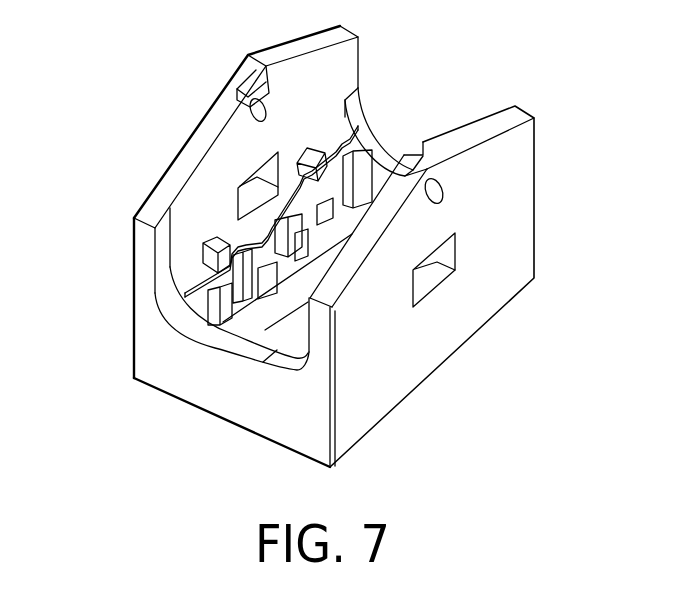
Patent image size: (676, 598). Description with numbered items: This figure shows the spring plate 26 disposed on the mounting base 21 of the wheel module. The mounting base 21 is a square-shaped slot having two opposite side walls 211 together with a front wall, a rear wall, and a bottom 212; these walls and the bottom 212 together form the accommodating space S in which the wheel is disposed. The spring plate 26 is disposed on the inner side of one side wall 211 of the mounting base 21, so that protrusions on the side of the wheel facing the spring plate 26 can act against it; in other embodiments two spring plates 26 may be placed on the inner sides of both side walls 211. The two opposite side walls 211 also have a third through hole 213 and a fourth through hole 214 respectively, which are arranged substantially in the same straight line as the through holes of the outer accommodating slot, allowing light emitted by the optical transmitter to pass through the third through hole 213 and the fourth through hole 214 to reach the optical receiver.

The mounting base 21 is at (143, 283).
The side walls 211 is at (237, 75).
The bottom 212 is at (247, 318).
The third through hole 213 is at (433, 278).
The fourth through hole 214 is at (256, 178).
The spring plate 26 is at (257, 250).
The accommodating space S is at (316, 92).